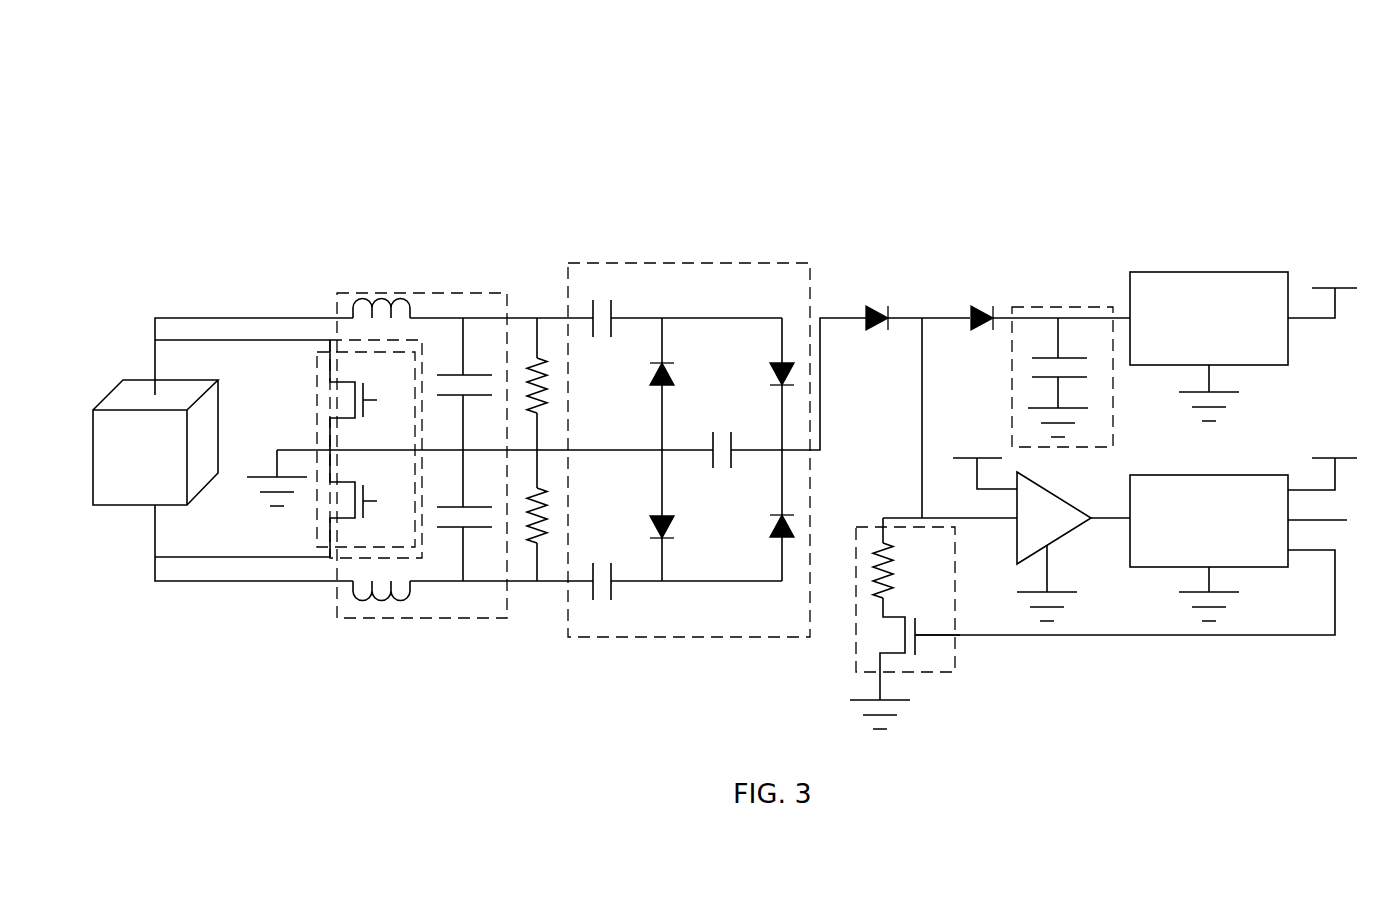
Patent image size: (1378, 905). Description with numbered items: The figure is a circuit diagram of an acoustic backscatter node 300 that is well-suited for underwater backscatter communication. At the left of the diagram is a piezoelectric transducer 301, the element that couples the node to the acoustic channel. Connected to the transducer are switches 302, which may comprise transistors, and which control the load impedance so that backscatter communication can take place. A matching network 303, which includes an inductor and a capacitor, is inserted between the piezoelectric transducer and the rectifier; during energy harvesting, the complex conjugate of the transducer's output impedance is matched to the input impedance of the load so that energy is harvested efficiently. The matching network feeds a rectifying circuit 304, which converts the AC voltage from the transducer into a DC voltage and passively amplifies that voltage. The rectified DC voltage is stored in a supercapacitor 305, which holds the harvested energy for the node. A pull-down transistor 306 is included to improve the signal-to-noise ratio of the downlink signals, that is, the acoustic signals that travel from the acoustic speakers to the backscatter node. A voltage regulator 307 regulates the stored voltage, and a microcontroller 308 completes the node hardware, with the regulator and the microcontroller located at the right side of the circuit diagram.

The backscatter node 300 is at (894, 120).
The piezoelectric transducer 301 is at (130, 506).
The switches 302 is at (318, 376).
The matching network 303 is at (428, 292).
The rectifying circuit 304 is at (588, 262).
The supercapacitor 305 is at (1058, 306).
The pull-down transistor 306 is at (848, 652).
The voltage regulator 307 is at (1215, 272).
The microcontroller 308 is at (1187, 475).